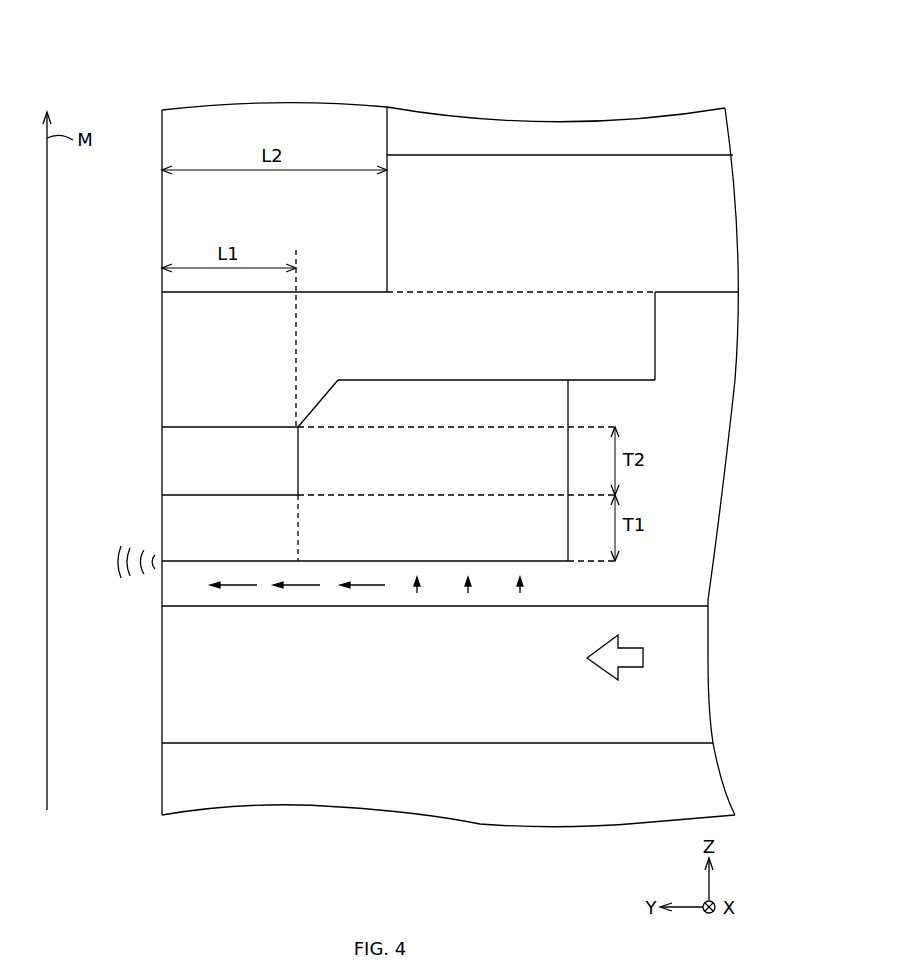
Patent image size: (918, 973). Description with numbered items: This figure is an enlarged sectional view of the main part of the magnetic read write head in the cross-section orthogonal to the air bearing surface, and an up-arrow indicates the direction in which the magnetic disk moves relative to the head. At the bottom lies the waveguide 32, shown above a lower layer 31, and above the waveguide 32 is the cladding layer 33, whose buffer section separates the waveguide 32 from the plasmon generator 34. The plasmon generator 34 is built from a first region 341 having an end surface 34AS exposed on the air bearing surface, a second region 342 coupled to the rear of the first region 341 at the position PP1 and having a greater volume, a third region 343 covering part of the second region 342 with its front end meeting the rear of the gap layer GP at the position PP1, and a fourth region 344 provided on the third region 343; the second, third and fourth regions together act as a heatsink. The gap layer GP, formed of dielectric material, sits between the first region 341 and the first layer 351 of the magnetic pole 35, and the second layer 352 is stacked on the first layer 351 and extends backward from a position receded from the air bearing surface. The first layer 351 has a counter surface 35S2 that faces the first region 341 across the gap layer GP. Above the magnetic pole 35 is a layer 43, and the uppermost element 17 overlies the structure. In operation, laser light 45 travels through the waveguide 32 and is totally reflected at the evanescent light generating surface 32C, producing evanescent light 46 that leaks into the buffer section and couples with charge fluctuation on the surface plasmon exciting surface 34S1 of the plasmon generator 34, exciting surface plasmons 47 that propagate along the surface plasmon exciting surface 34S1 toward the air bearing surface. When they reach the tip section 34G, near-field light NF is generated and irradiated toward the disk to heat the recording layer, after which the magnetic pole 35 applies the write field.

The slider 17 is at (252, 108).
The upper layer 43 is at (430, 112).
The magnetic pole 35 is at (498, 53).
The first layer 351 is at (522, 353).
The second layer 352 is at (612, 172).
The counter surface 35S2 is at (300, 428).
The cladding layer 33 is at (722, 445).
The plasmon generator 34 is at (258, 868).
The first region 341 is at (248, 525).
The second region 342 is at (318, 525).
The third region 343 is at (380, 472).
The fourth region 344 is at (427, 400).
The tip section 34G is at (158, 565).
The surface plasmon exciting surface 34S1 is at (176, 566).
The end surface 34AS is at (158, 515).
The gap layer GP is at (168, 462).
The near-field light NF is at (113, 565).
The position PP1 is at (296, 248).
The evanescent light 46 is at (468, 580).
The surface plasmons 47 is at (233, 588).
The laser light 45 is at (645, 656).
The waveguide 32 is at (572, 728).
The evanescent light generating surface 32C is at (697, 602).
The substrate 31 is at (618, 813).